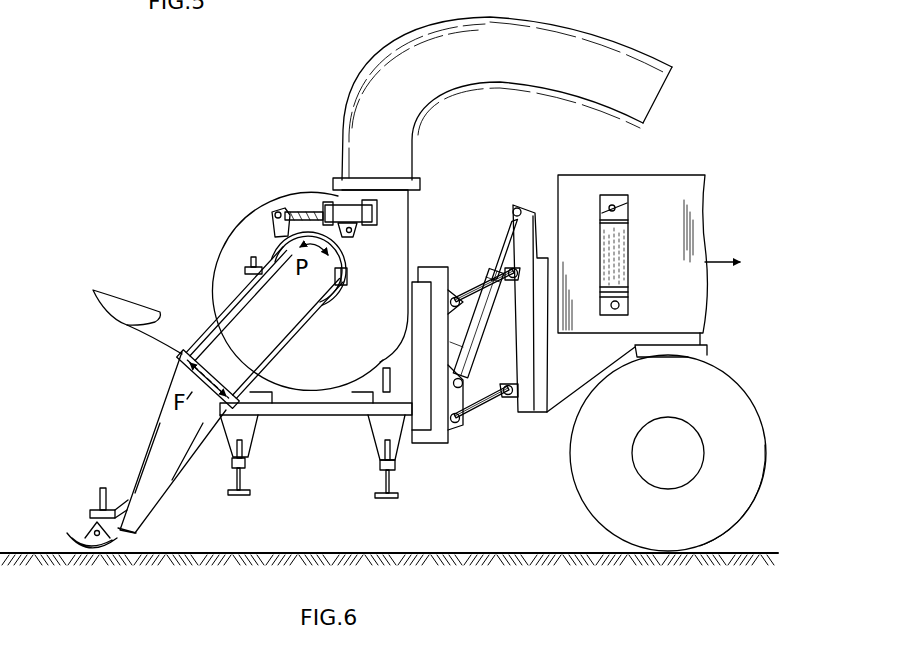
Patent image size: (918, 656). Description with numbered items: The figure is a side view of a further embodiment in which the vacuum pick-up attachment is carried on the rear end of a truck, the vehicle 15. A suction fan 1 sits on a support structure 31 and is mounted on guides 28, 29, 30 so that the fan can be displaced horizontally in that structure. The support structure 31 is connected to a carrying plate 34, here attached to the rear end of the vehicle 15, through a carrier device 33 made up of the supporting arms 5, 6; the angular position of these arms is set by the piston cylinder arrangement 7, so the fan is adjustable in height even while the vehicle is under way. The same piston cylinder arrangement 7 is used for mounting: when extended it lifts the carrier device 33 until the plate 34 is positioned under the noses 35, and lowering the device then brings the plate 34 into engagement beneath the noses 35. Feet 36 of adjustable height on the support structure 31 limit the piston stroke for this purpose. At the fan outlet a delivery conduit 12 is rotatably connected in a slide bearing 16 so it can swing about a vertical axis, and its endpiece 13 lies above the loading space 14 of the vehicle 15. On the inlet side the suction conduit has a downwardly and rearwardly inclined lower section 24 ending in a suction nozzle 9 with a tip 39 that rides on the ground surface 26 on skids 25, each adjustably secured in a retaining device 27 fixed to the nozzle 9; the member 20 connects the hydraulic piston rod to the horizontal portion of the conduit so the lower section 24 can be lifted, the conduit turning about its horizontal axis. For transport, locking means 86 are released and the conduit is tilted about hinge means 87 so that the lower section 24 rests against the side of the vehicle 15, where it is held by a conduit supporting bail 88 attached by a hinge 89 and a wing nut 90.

The suction fan 1 is at (397, 316).
The supporting arm 5 is at (480, 317).
The supporting arm 6 is at (470, 420).
The piston cylinder arrangement 7 is at (468, 368).
The suction nozzle 9 is at (168, 475).
The delivery conduit 12 is at (342, 130).
The endpiece 13 is at (580, 38).
The loading space 14 is at (585, 177).
The vehicle 15 is at (563, 415).
The slide bearing 16 is at (422, 183).
The member 20 is at (277, 213).
The lower section 24 is at (283, 332).
The skid 25 is at (83, 543).
The ground surface 26 is at (237, 550).
The retaining device 27 is at (90, 497).
The guide 28 is at (386, 378).
The guide 29 is at (262, 400).
The guide 30 is at (420, 272).
The support structure 31 is at (324, 410).
The carrier device 33 is at (523, 340).
The carrying plate 34 is at (543, 362).
The nose 35 is at (544, 250).
The foot 36 is at (245, 481).
The nozzle tip 39 is at (130, 537).
The locking means 86 is at (245, 262).
The hinge means 87 is at (350, 272).
The conduit supporting bail 88 is at (625, 256).
The hinge 89 is at (625, 305).
The wing nut 90 is at (625, 205).